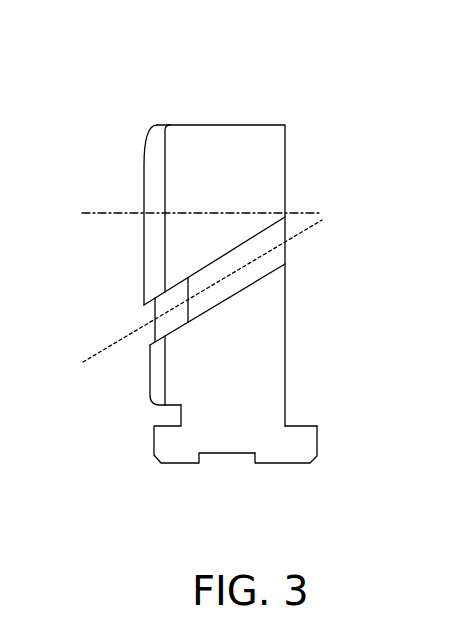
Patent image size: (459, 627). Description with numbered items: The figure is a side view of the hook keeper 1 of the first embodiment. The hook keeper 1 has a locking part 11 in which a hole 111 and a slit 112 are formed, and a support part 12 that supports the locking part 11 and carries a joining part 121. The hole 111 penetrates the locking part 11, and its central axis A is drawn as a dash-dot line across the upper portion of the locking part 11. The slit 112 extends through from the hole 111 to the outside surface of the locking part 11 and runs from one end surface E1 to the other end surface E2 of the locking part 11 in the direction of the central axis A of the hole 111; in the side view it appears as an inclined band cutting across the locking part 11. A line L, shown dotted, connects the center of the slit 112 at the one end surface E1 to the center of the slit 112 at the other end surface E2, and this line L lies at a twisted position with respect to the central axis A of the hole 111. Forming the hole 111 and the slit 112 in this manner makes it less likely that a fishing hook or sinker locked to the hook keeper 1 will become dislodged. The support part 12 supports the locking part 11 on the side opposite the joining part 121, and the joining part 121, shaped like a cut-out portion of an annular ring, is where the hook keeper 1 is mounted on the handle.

The hook keeper 1 is at (275, 103).
The locking part 11 is at (202, 133).
The hole 111 is at (132, 193).
The slit 112 is at (255, 290).
The support part 12 is at (189, 421).
The joining part 121 is at (273, 455).
The central axis A is at (110, 214).
The one end surface E1 is at (128, 276).
The other end surface E2 is at (312, 258).
The line L is at (107, 350).